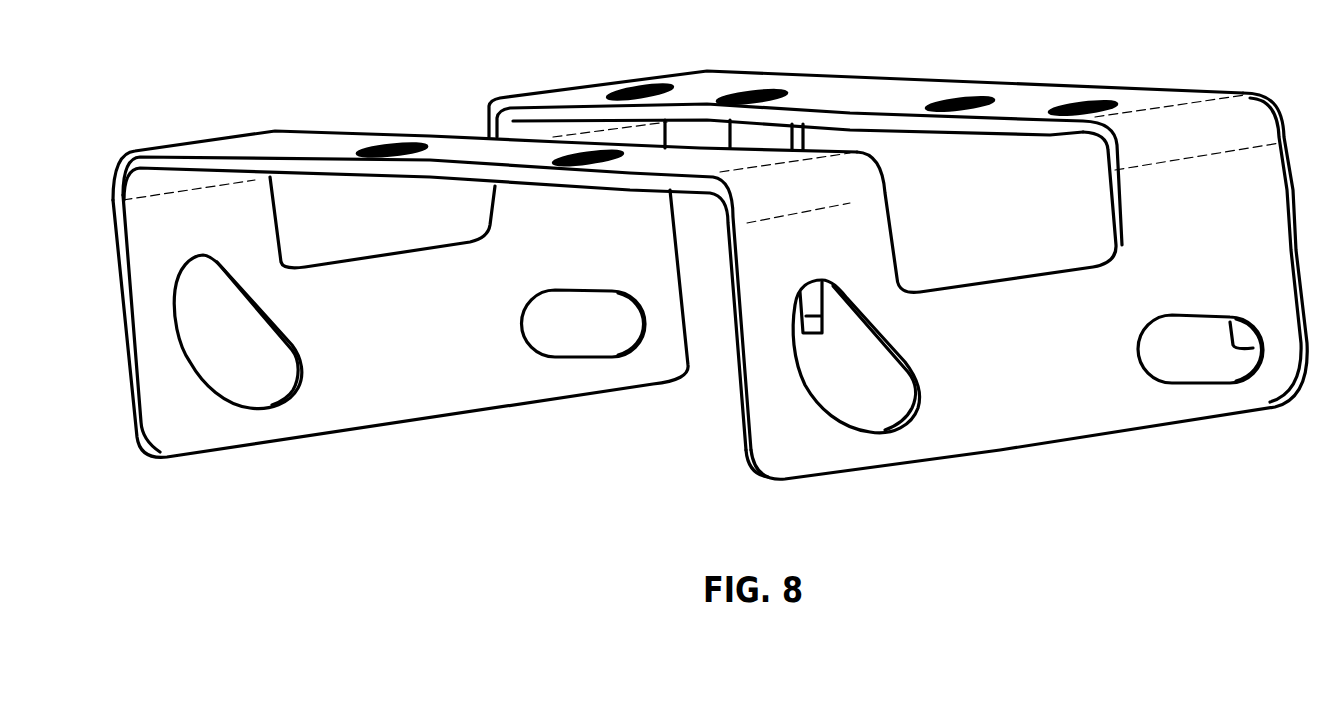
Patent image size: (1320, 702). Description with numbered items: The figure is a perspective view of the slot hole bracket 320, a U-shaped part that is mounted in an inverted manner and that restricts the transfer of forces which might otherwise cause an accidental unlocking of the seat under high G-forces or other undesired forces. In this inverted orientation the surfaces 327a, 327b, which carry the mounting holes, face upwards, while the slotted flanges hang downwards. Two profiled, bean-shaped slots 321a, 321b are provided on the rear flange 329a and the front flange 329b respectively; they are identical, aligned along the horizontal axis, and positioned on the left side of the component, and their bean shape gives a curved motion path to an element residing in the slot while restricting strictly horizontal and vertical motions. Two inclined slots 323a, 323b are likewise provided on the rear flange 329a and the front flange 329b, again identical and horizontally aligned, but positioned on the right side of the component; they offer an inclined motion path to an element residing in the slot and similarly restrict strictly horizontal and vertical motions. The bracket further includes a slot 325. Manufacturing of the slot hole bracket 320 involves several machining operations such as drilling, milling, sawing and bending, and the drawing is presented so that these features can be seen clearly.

The slot hole bracket 320 is at (988, 80).
The bean-shaped slot 321a is at (272, 385).
The bean-shaped slot 321b is at (870, 440).
The inclined slot 323a is at (520, 330).
The inclined slot 323b is at (1137, 365).
The slot 325 is at (985, 270).
The surface 327a is at (323, 142).
The surface 327b is at (868, 33).
The rear flange 329a is at (470, 387).
The front flange 329b is at (1090, 420).